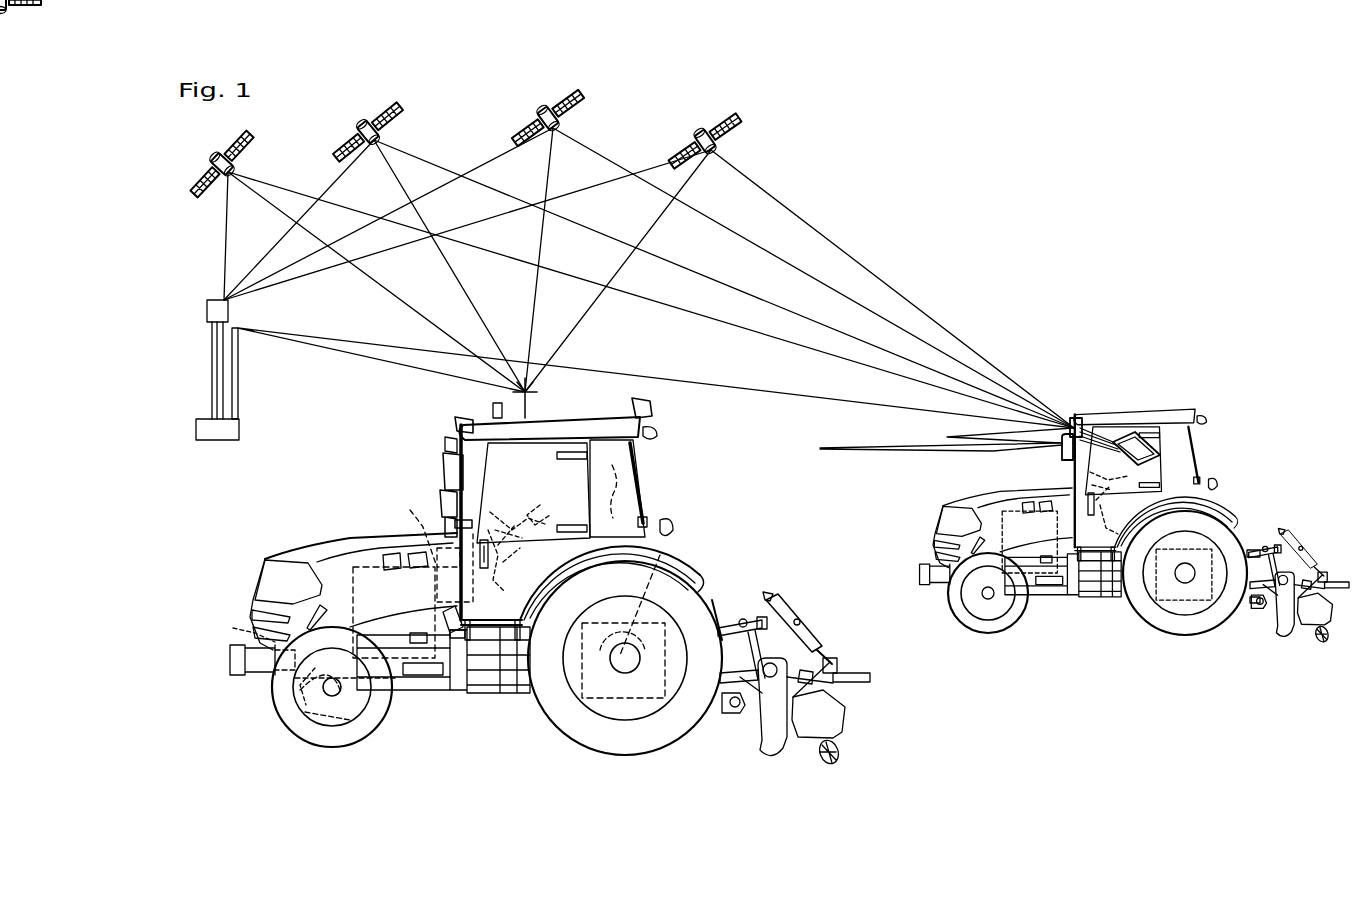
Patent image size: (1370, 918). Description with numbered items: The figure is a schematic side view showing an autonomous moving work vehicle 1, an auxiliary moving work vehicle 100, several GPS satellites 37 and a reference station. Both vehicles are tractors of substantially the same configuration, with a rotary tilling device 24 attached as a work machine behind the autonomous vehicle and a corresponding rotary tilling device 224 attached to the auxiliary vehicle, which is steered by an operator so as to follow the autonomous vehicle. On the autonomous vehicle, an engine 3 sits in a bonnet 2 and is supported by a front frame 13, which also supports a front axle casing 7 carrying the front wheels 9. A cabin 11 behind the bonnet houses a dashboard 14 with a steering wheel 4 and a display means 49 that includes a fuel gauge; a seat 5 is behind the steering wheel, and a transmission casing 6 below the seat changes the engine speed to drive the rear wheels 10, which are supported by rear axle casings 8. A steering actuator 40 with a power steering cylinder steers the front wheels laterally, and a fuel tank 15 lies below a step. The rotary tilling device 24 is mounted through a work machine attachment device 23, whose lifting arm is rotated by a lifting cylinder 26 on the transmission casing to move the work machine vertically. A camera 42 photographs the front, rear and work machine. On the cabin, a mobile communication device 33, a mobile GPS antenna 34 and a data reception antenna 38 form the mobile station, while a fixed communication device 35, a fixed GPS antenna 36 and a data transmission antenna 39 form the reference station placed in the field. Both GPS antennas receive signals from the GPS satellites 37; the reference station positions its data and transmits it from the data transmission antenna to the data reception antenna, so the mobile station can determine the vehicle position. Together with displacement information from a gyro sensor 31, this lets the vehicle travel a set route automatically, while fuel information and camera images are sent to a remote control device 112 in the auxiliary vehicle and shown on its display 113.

The autonomous moving work vehicle 1 is at (668, 352).
The bonnet 2 is at (312, 545).
The engine 3 is at (368, 520).
The steering wheel 4 is at (536, 505).
The seat 5 is at (609, 500).
The transmission casing 6 is at (700, 620).
The front axle casing 7 is at (272, 722).
The rear axle casing 8 is at (627, 680).
The front wheel 9 is at (303, 747).
The rear wheel 10 is at (706, 718).
The cabin 11 is at (648, 490).
The front frame 13 is at (280, 665).
The dashboard 14 is at (512, 556).
The fuel tank 15 is at (457, 660).
The work machine attachment device 23 is at (733, 607).
The rotary tilling device 24 is at (809, 600).
The lifting cylinder 26 is at (680, 580).
The gyro sensor 31 is at (426, 522).
The mobile communication device 33 is at (418, 532).
The mobile GPS antenna 34 is at (540, 392).
The fixed communication device 35 is at (239, 430).
The fixed GPS antenna 36 is at (207, 300).
The GPS satellite 37 is at (212, 160).
The data reception antenna 38 is at (493, 405).
The data transmission antenna 39 is at (238, 394).
The steering actuator 40 is at (244, 633).
The camera 42 is at (652, 404).
The display means 49 is at (492, 512).
The auxiliary moving work vehicle 100 is at (1064, 290).
The remote control device 112 is at (1143, 421).
The display 113 is at (1082, 418).
The rotary tilling device 224 is at (1302, 496).